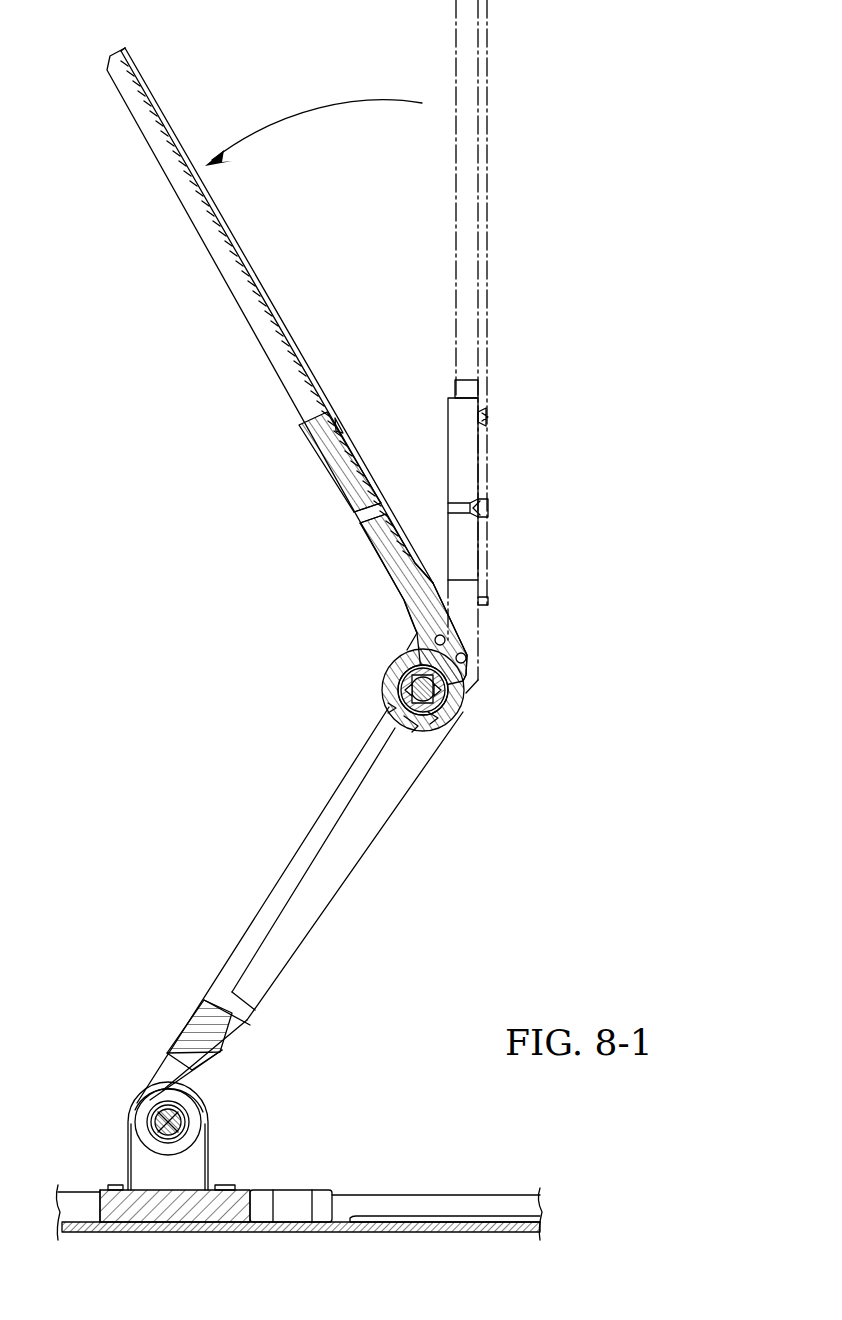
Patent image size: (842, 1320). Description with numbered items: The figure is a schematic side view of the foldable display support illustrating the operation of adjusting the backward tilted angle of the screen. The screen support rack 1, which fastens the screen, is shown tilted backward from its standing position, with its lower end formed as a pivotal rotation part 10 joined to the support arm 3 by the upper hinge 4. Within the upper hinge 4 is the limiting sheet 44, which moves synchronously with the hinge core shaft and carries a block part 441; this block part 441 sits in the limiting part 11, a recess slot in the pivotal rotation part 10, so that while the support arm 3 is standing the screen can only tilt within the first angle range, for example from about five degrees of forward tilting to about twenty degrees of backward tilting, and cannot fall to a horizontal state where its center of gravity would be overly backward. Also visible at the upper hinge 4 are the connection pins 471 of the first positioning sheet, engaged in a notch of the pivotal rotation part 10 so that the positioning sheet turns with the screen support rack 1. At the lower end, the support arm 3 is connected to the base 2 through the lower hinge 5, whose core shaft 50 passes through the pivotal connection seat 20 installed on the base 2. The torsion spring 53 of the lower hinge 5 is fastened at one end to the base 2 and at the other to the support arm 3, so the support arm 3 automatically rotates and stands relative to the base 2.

The screen support rack 1 is at (342, 473).
The pivotal rotation part 10 is at (400, 660).
The limiting sheet 44 is at (435, 700).
The upper hinge 4 is at (432, 688).
The block part 441 is at (392, 709).
The connection pins 471 is at (433, 715).
The limiting part 11 is at (413, 722).
The support arm 3 is at (317, 887).
The torsion spring 53 is at (210, 1067).
The lower hinge 5 is at (147, 1110).
The core shaft 50 is at (180, 1128).
The pivotal connection seat 20 is at (143, 1160).
The base 2 is at (403, 1208).